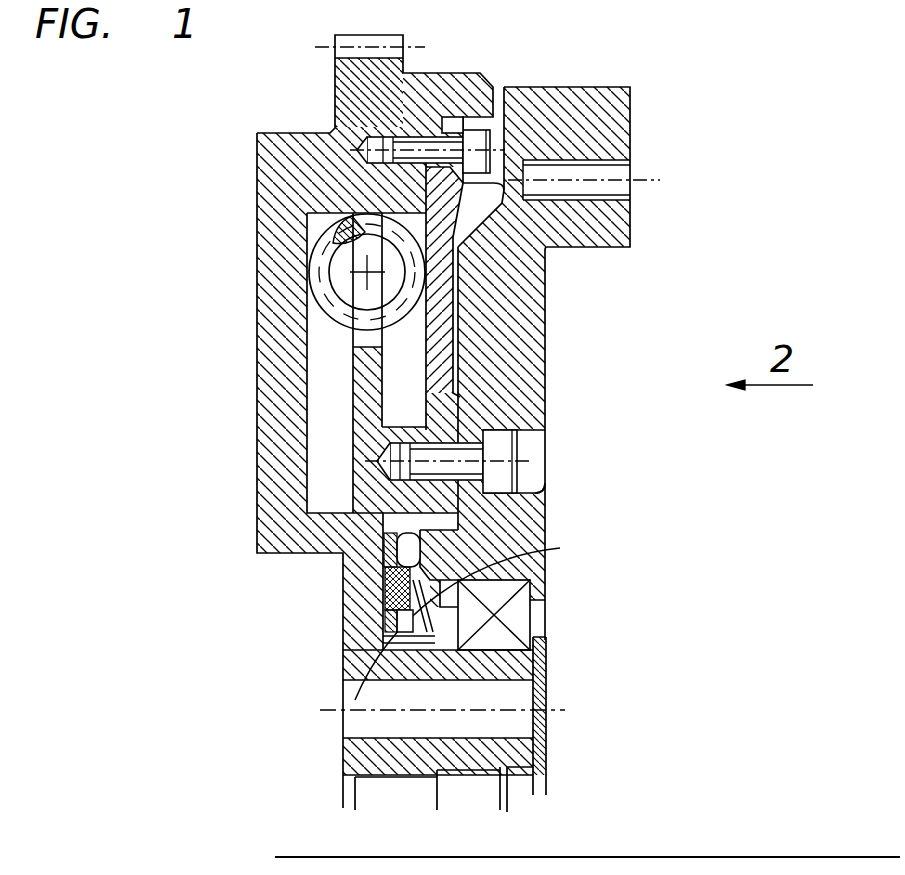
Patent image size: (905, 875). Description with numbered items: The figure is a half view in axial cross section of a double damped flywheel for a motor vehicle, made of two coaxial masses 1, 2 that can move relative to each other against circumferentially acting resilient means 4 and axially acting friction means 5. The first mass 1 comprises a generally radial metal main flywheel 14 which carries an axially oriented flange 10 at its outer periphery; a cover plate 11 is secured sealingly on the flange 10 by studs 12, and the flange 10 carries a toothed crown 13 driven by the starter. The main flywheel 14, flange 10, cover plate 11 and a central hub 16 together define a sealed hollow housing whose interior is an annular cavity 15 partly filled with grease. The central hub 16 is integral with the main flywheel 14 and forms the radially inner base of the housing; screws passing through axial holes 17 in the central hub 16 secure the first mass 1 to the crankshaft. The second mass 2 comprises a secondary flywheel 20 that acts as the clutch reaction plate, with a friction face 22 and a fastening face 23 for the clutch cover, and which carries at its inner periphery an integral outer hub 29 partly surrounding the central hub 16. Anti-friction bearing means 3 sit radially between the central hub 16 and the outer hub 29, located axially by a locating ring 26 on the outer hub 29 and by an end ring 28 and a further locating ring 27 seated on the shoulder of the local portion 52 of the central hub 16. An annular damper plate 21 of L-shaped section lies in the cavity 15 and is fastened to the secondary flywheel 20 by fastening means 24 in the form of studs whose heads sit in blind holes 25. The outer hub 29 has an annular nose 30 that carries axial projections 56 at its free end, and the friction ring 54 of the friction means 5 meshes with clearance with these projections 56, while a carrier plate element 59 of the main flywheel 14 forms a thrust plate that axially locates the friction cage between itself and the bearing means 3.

The first mass 1 is at (242, 339).
The second mass 2 is at (562, 330).
The anti-friction bearing means 3 is at (536, 625).
The circumferentially acting resilient means 4 is at (312, 293).
The axially acting friction means 5 is at (390, 647).
The axially oriented flange 10 is at (277, 133).
The cover plate 11 is at (427, 142).
The studs 12 is at (447, 125).
The toothed crown 13 is at (335, 82).
The main flywheel 14 is at (257, 243).
The sealed annular cavity 15 is at (305, 212).
The central hub 16 is at (360, 758).
The axial holes 17 is at (372, 722).
The secondary flywheel 20 is at (522, 382).
The damper plate 21 is at (353, 405).
The friction face 22 is at (545, 283).
The fastening face 23 is at (632, 118).
The fastening means 24 is at (527, 441).
The blind holes 25 is at (545, 483).
The locating ring 26 is at (530, 558).
The further locating ring 27 is at (533, 670).
The end ring 28 is at (547, 727).
The outer hub 29 is at (533, 570).
The annular nose 30 is at (545, 518).
The local portion 52 is at (372, 670).
The friction ring 54 is at (365, 600).
The axial projections 56 is at (335, 508).
The carrier plate element 59 is at (355, 582).